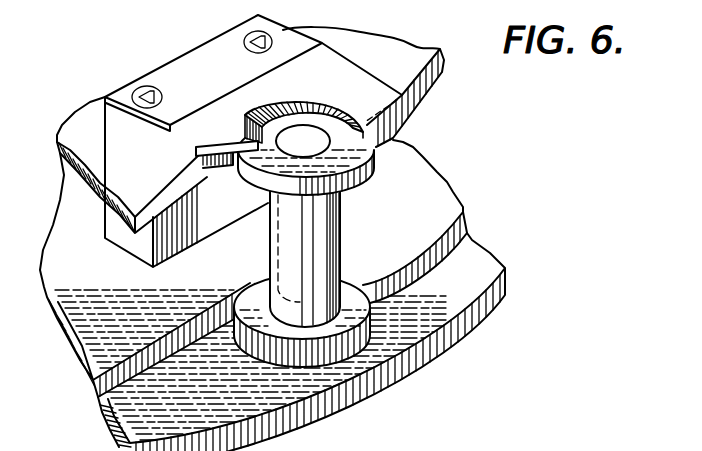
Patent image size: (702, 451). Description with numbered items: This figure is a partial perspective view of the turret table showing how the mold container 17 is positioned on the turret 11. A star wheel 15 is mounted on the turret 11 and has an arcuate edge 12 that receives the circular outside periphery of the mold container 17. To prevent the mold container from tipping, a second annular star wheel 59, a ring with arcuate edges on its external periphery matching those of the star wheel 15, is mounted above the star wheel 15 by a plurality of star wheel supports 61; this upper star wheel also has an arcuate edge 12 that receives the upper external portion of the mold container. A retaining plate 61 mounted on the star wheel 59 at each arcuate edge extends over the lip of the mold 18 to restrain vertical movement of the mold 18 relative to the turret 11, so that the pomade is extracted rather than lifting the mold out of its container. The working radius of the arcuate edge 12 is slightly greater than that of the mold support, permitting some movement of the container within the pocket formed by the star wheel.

The turret 11 is at (477, 279).
The arcuate edge 12 is at (196, 181).
The star wheel 15 is at (424, 217).
The mold container 17 is at (395, 308).
The mold 18 is at (351, 281).
The second star wheel 59 is at (400, 74).
The star wheel support / retaining plate 61 is at (314, 87).